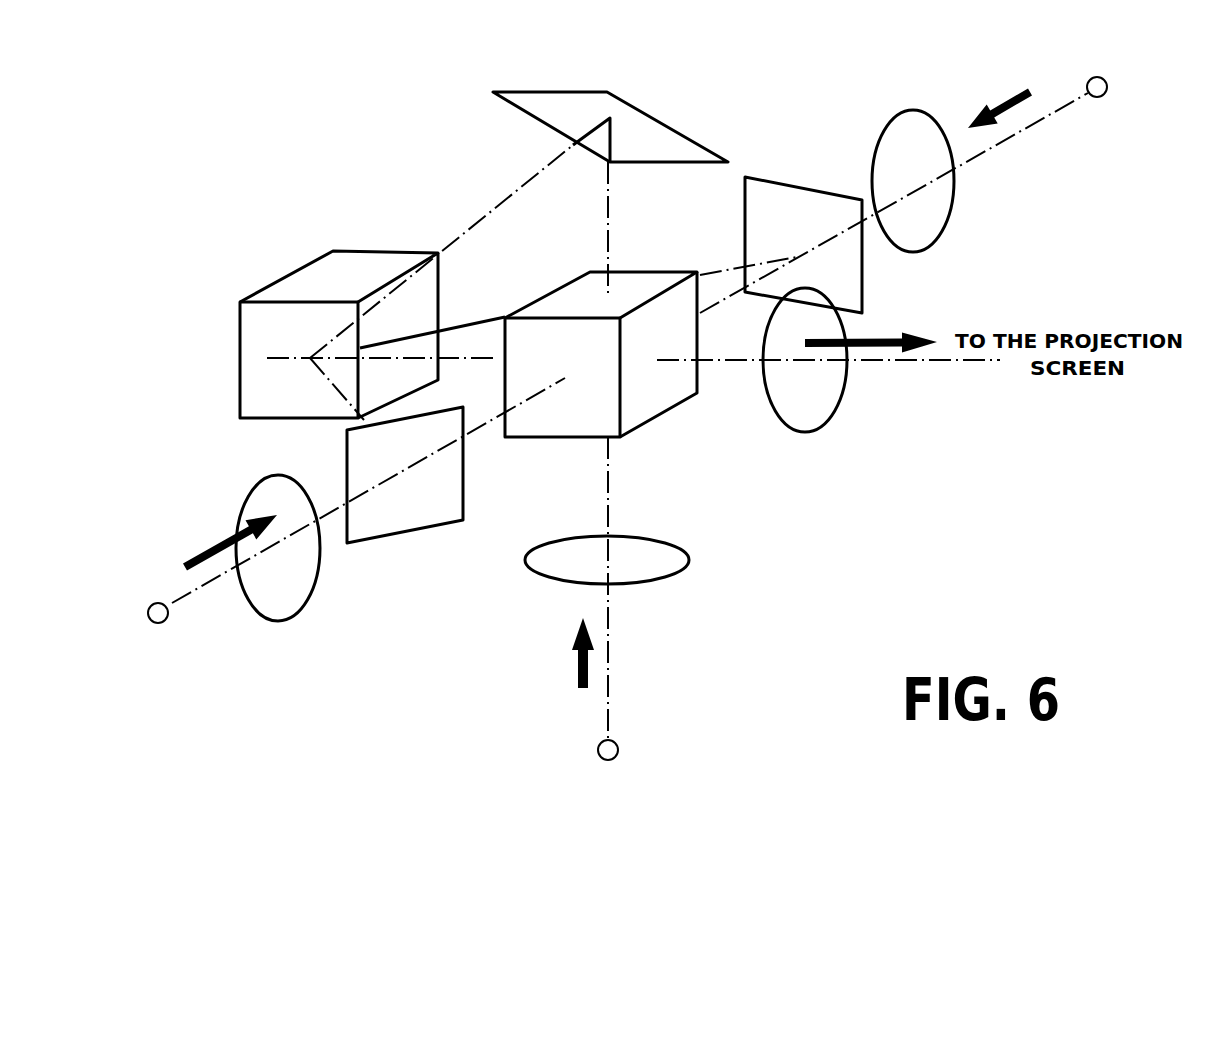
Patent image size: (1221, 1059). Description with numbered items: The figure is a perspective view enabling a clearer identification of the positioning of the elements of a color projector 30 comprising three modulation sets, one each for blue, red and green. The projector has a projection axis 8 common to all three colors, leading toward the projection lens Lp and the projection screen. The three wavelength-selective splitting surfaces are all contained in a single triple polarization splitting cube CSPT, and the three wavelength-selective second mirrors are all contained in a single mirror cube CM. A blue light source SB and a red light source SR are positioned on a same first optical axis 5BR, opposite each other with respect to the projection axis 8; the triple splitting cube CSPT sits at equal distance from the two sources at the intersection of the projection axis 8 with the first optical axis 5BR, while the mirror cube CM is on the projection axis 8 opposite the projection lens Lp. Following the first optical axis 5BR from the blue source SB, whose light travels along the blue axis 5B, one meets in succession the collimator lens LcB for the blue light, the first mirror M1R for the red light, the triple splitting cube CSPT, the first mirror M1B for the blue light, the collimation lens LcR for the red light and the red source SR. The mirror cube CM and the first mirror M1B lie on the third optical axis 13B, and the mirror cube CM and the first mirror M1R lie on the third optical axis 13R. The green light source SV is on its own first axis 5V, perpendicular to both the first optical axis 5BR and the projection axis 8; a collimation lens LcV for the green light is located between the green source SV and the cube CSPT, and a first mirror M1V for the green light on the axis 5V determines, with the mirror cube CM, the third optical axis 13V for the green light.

The first mirror for the green light M1V is at (610, 94).
The first mirror for the red light M1R is at (793, 183).
The first mirror for the blue light M1B is at (403, 535).
The third optical axis for the green light 13V is at (512, 195).
The third optical axis for the red light 13R is at (723, 270).
The third optical axis for the blue light 13B is at (370, 418).
The mirror cube CM is at (238, 348).
The triple polarization splitting cube CSPT is at (653, 403).
The first optical axis of green light 5V is at (610, 483).
The first optical axis 5BR is at (477, 428).
The optical axis of blue light 5B is at (1013, 138).
The collimator lens for the blue light LcB is at (953, 220).
The collimation lens for the red light LcR is at (307, 603).
The collimation lens for the green light LcV is at (640, 580).
The projection lens Lp is at (827, 418).
The projection axis 8 is at (932, 362).
The blue light source SB is at (1108, 93).
The red light source SR is at (163, 623).
The green light source SV is at (598, 755).
The color projector 30 is at (375, 743).